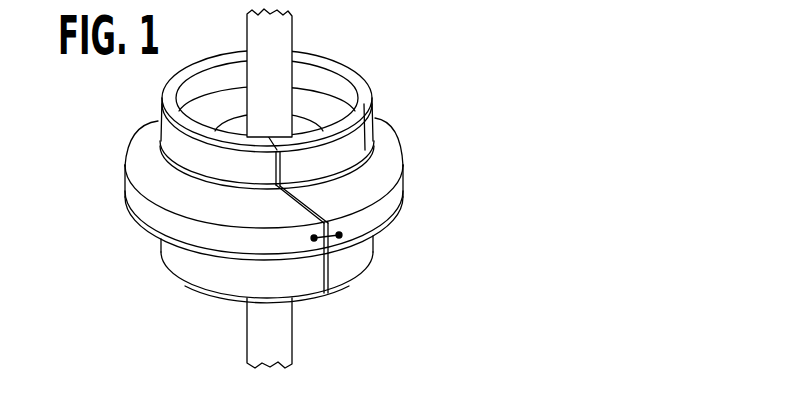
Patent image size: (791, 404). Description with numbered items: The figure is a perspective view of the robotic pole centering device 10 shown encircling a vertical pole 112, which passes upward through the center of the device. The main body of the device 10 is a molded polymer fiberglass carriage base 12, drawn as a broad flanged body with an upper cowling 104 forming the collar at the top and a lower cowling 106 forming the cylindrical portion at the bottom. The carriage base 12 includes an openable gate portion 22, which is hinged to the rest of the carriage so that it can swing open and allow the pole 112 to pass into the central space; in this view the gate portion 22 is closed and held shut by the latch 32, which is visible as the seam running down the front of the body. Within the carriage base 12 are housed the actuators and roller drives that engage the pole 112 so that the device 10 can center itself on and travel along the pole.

The robotic pole centering device 10 is at (432, 126).
The carriage base 12 is at (416, 174).
The openable gate portion 22 is at (389, 206).
The latch 32 is at (362, 258).
The upper cowling 104 is at (371, 99).
The lower cowling 106 is at (309, 282).
The pole 112 is at (273, 50).